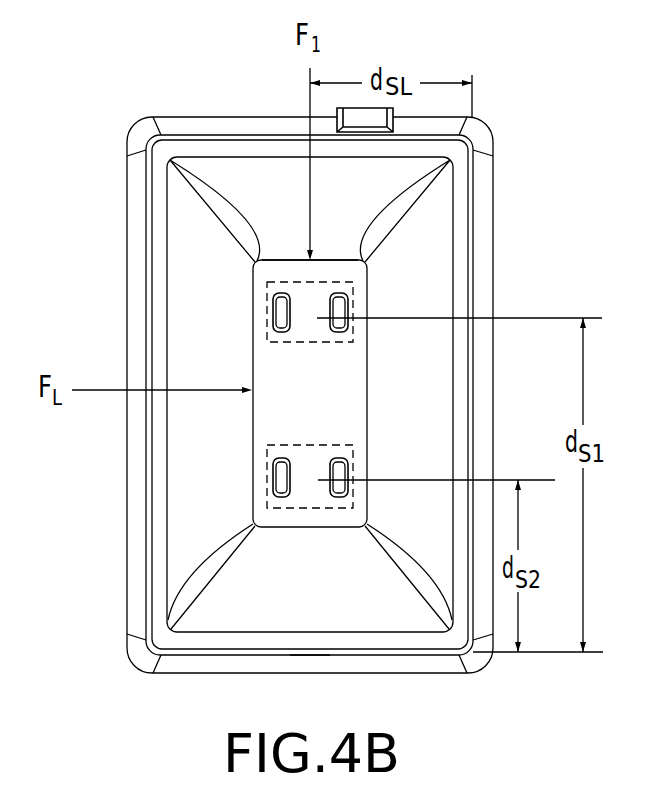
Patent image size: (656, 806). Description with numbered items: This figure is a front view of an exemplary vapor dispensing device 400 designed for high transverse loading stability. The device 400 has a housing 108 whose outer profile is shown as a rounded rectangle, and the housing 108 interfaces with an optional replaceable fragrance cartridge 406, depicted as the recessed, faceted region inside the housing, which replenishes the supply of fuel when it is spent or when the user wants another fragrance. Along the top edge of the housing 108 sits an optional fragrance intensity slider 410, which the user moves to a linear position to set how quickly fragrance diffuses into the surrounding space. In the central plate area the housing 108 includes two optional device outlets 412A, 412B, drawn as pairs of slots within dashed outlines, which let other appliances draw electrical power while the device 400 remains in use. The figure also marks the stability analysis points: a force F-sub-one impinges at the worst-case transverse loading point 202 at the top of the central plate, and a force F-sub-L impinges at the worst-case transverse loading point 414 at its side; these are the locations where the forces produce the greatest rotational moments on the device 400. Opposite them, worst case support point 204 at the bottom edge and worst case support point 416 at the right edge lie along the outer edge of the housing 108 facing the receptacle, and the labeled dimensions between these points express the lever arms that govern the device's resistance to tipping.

The vapor dispensing device 400 is at (522, 218).
The housing 108 is at (137, 273).
The worst case support point 416 is at (470, 385).
The replaceable fragrance cartridge 406 is at (180, 227).
The worst-case transverse loading point 414 is at (252, 389).
The worst-case transverse loading point 202 is at (310, 259).
The worst case support point 204 is at (308, 653).
The fragrance intensity slider 410 is at (357, 122).
The device outlet 412A is at (270, 318).
The device outlet 412B is at (270, 470).